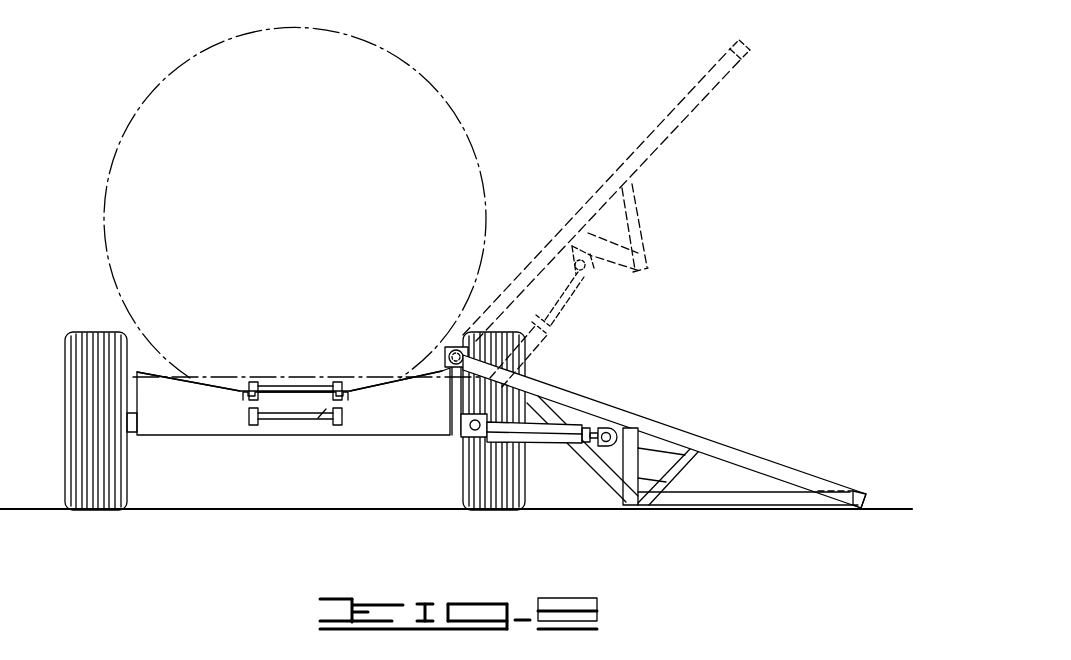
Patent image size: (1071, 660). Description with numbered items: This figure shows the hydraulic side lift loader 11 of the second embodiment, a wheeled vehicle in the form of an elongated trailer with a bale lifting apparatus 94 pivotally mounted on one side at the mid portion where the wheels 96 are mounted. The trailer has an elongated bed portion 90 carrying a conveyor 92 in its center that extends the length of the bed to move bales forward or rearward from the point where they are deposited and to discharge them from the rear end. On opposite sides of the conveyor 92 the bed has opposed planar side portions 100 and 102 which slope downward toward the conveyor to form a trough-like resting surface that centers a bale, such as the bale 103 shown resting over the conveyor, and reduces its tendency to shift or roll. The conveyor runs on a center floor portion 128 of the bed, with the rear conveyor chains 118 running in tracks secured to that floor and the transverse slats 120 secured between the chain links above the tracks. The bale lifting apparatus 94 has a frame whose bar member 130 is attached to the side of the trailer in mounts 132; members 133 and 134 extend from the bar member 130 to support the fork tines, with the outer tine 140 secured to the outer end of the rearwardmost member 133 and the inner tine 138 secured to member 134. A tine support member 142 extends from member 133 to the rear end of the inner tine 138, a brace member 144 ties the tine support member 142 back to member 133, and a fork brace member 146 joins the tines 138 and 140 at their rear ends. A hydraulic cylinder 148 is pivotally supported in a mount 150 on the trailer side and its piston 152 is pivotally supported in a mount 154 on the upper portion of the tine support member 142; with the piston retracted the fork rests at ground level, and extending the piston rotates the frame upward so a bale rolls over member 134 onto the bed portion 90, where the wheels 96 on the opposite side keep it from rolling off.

The hydraulic side lift loader 11 is at (320, 258).
The bed portion 90 is at (190, 370).
The conveyor 92 is at (320, 368).
The bale lifting apparatus 94 is at (738, 360).
The wheels 96 is at (104, 336).
The planar side portion 100 is at (426, 374).
The planar side portion 102 is at (210, 384).
The bale 103 is at (476, 122).
The chains 118 is at (248, 412).
The slats 120 is at (318, 416).
The center floor portion 128 is at (283, 398).
The bar member 130 is at (449, 366).
The mounts 132 is at (456, 342).
The member 133 is at (612, 182).
The member 134 is at (598, 475).
The inner tine 138 is at (633, 508).
The tine 140 is at (752, 60).
The tine support member 142 is at (665, 465).
The brace member 144 is at (660, 484).
The fork brace member 146 is at (760, 497).
The cylinder 148 is at (550, 430).
The mount 150 is at (470, 432).
The piston 152 is at (604, 430).
The mount 154 is at (628, 430).